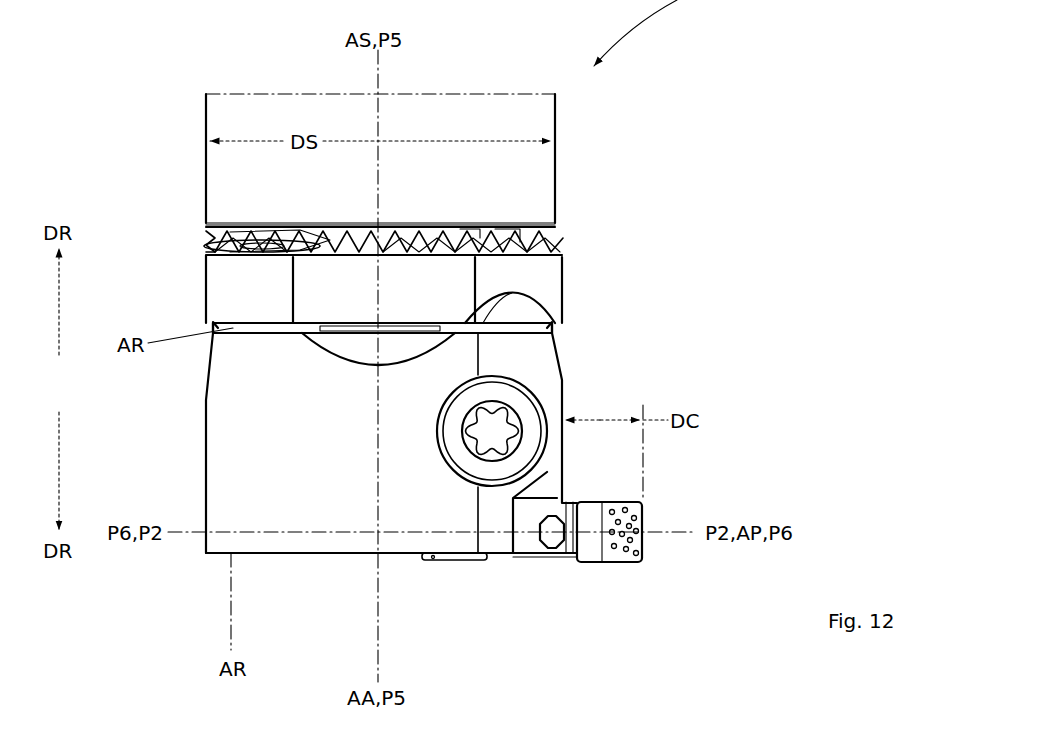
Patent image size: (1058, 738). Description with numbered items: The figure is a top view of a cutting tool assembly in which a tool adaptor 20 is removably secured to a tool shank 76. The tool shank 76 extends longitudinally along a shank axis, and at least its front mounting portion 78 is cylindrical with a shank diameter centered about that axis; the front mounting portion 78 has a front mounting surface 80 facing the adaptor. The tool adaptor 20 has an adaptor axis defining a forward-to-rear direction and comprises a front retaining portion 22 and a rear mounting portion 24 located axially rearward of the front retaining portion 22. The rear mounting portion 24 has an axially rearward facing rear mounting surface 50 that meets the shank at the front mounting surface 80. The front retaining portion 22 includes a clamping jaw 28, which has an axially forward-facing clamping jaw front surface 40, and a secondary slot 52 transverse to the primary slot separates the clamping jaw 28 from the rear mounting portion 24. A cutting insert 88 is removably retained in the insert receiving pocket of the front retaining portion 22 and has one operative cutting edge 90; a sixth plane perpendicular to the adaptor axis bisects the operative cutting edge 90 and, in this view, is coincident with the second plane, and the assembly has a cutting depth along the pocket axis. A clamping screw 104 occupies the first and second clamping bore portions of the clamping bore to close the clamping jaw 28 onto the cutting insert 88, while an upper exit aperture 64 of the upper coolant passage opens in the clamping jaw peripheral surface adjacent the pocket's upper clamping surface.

The tool adaptor 20 is at (203, 352).
The front retaining portion 22 is at (277, 446).
The rear mounting portion 24 is at (244, 277).
The clamping jaw 28 is at (430, 517).
The clamping jaw front surface 40 is at (352, 558).
The rear mounting surface 50 is at (256, 230).
The secondary slot 52 is at (520, 321).
The upper exit aperture 64 is at (552, 550).
The tool shank 76 is at (426, 119).
The front mounting portion 78 is at (530, 163).
The front mounting surface 80 is at (511, 246).
The cutting insert 88 is at (589, 549).
The operative cutting edge 90 is at (642, 530).
The clamping screw 104 is at (497, 429).